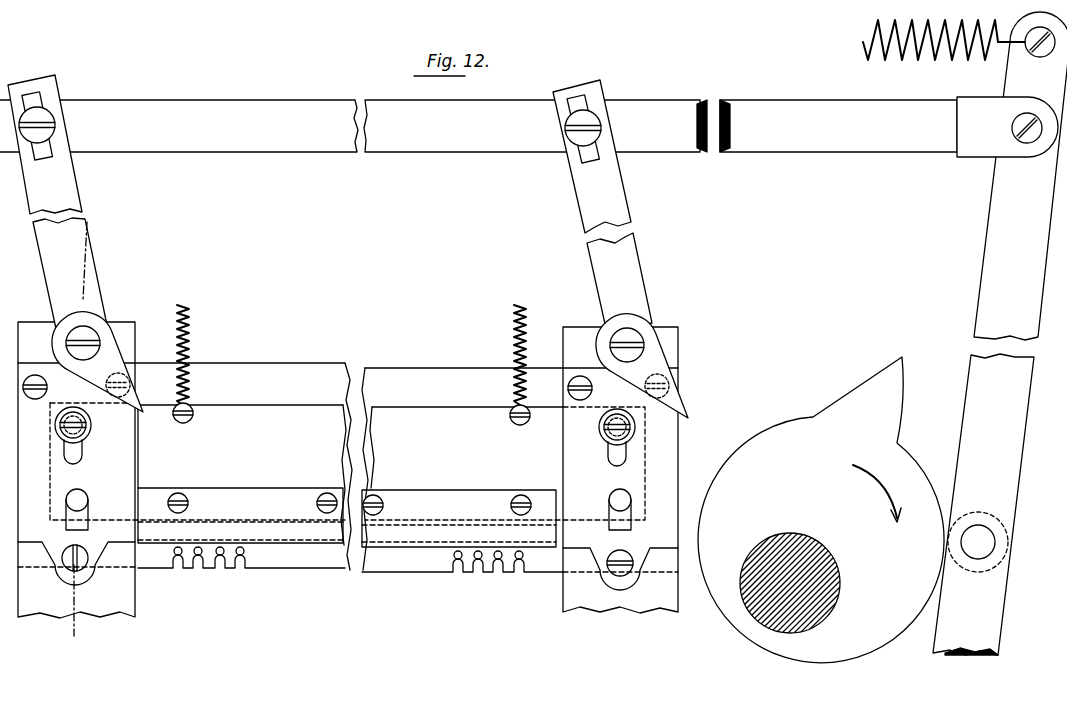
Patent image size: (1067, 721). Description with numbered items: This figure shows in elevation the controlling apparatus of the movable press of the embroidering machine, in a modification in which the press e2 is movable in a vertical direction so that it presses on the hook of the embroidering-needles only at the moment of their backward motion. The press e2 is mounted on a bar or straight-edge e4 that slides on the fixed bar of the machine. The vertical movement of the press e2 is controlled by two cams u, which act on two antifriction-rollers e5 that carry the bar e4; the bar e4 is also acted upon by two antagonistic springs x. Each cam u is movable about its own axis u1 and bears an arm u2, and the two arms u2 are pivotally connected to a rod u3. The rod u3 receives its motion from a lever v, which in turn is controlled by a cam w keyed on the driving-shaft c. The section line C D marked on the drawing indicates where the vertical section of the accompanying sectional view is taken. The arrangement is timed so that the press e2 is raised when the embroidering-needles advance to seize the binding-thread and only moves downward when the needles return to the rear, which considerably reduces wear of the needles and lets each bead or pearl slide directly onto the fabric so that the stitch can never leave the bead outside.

The rod u3 is at (478, 126).
The arm u2 is at (330, 206).
The axis u1 is at (83, 330).
The cam u is at (370, 365).
The antagonistic spring x is at (190, 323).
The bar or straight-edge e4 is at (348, 470).
The press e2 is at (350, 530).
The antifriction-roller e5 is at (92, 430).
The section line C is at (76, 261).
The section line D is at (82, 600).
The lever v is at (1000, 333).
The cam w is at (821, 510).
The driving-shaft c is at (758, 548).